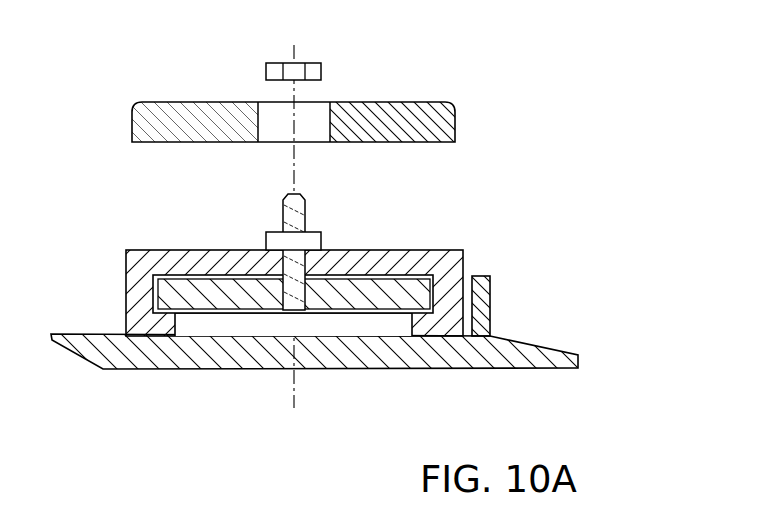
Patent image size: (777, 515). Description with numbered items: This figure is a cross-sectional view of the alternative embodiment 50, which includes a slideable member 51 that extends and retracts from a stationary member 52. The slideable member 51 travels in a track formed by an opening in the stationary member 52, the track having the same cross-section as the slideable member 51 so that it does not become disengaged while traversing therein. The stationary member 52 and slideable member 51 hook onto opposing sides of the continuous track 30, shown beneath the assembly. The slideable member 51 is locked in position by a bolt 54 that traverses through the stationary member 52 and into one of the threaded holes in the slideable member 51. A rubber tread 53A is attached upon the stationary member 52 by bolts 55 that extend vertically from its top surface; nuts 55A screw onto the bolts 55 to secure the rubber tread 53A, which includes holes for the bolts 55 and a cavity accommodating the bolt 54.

The continuous track 30 is at (129, 365).
The alternative embodiment 50 is at (381, 288).
The slideable member 51 is at (375, 307).
The stationary member 52 is at (146, 250).
The rubber tread 53A is at (453, 118).
The bolt 54 is at (363, 231).
The bolt 55 is at (305, 202).
The nut 55A is at (321, 70).